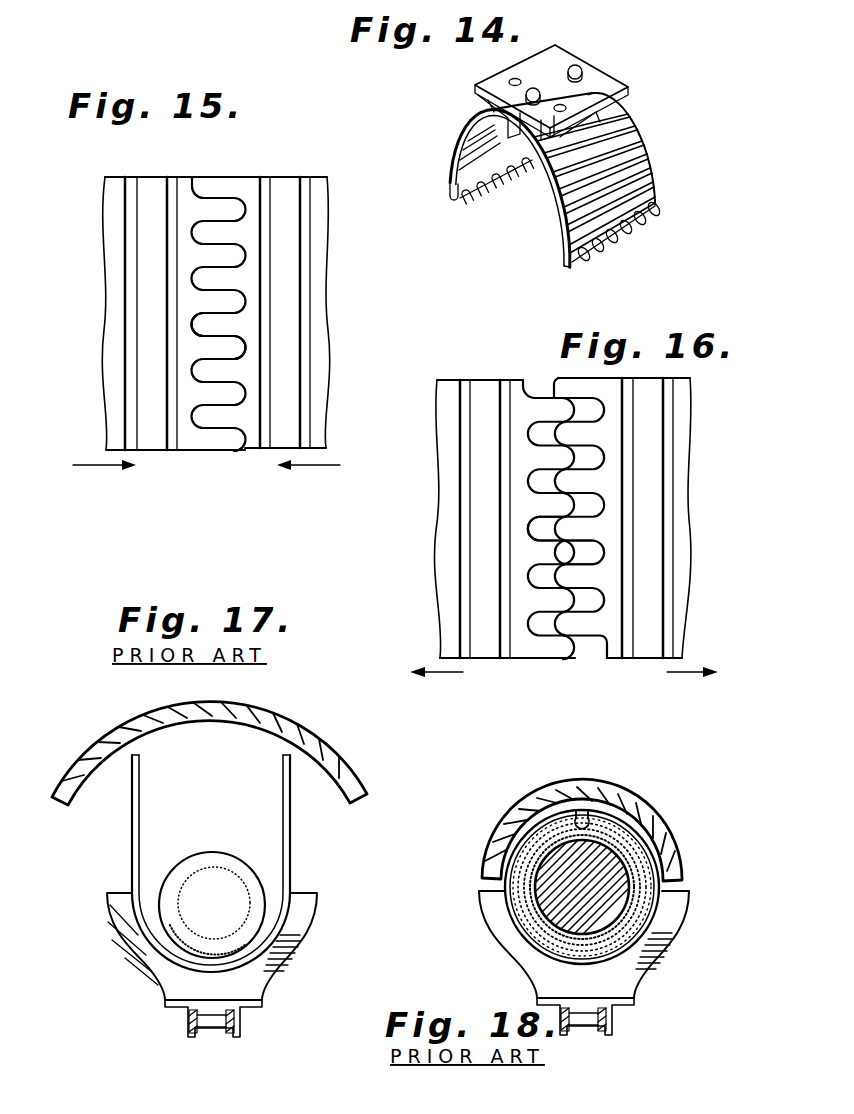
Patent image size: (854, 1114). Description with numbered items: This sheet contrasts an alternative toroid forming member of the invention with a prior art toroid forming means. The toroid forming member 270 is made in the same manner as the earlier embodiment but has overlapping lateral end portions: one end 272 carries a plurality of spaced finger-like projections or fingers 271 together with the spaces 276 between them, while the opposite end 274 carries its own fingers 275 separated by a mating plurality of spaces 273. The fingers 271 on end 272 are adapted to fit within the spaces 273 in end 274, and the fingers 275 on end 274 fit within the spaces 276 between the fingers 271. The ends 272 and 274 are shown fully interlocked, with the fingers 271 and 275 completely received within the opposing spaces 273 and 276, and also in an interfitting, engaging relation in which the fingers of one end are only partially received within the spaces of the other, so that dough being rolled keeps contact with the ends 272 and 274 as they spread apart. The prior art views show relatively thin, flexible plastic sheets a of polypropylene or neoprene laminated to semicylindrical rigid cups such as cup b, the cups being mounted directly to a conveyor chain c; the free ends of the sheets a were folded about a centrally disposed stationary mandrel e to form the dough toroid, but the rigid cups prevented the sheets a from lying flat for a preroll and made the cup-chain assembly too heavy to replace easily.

In FIG. 14, the toroid forming member 270 is at (640, 122).
In FIG. 14, the fingers 271 is at (593, 253).
In FIG. 15, the fingers 271 is at (205, 320).
In FIG. 16, the fingers 271 is at (563, 528).
In FIG. 14, the end 272 is at (560, 255).
In FIG. 15, the end 272 is at (222, 177).
In FIG. 16, the end 272 is at (618, 660).
In FIG. 14, the spaces 273 is at (493, 182).
In FIG. 16, the spaces 273 is at (600, 458).
In FIG. 14, the end 274 is at (450, 190).
In FIG. 15, the end 274 is at (183, 178).
In FIG. 16, the end 274 is at (545, 660).
In FIG. 14, the fingers 275 is at (467, 198).
In FIG. 16, the fingers 275 is at (563, 412).
In FIG. 14, the spaces 276 is at (637, 235).
In FIG. 15, the spaces 276 is at (230, 352).
In FIG. 16, the spaces 276 is at (597, 553).
In FIG. 17, the plastic sheets a is at (290, 833).
In FIG. 18, the plastic sheets a is at (638, 838).
In FIG. 17, the cup b is at (300, 931).
In FIG. 18, the cup b is at (663, 953).
In FIG. 17, the conveyor chain c is at (283, 722).
In FIG. 18, the conveyor chain c is at (613, 1023).
In FIG. 18, the stationary mandrel e is at (555, 858).